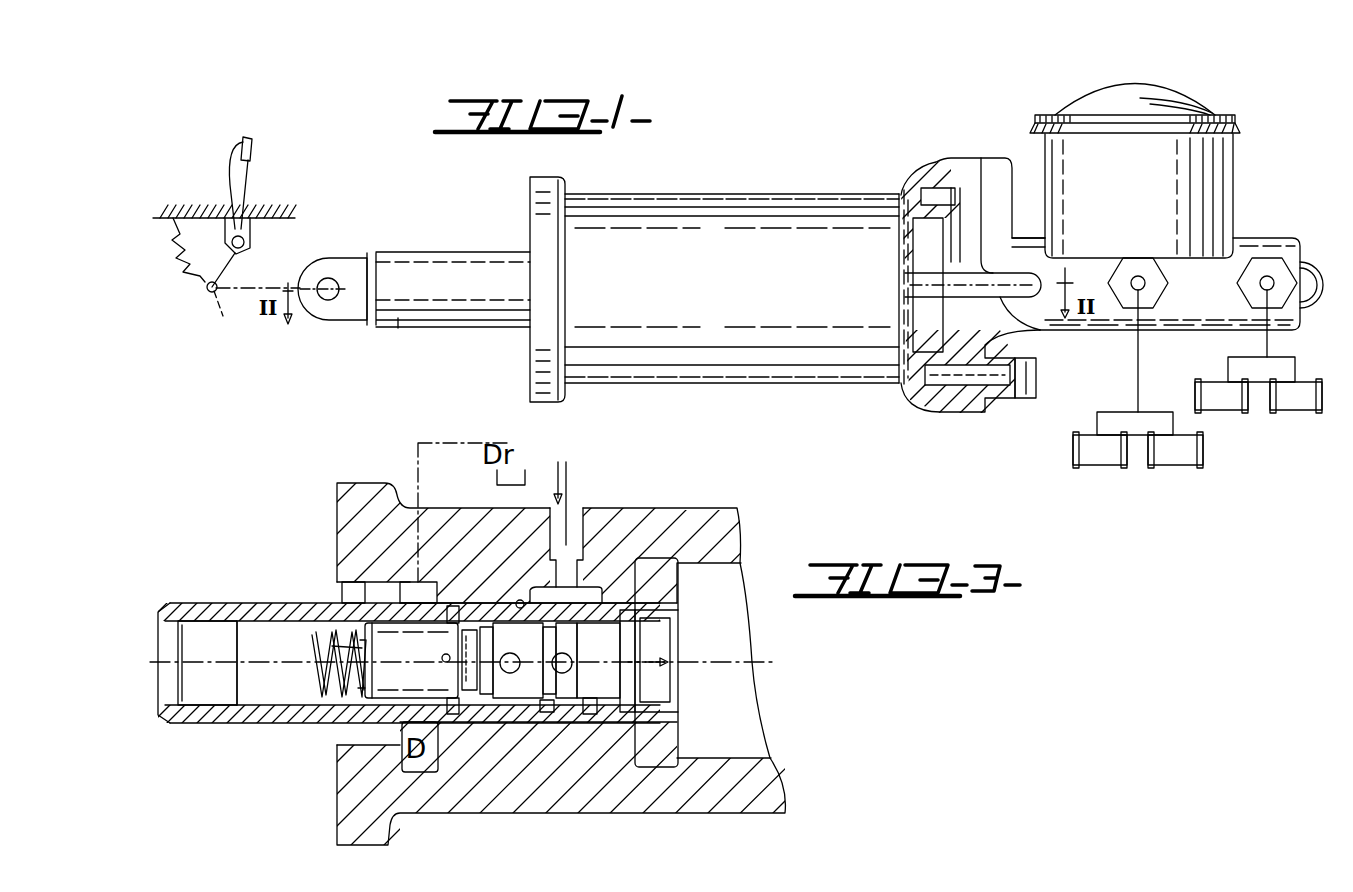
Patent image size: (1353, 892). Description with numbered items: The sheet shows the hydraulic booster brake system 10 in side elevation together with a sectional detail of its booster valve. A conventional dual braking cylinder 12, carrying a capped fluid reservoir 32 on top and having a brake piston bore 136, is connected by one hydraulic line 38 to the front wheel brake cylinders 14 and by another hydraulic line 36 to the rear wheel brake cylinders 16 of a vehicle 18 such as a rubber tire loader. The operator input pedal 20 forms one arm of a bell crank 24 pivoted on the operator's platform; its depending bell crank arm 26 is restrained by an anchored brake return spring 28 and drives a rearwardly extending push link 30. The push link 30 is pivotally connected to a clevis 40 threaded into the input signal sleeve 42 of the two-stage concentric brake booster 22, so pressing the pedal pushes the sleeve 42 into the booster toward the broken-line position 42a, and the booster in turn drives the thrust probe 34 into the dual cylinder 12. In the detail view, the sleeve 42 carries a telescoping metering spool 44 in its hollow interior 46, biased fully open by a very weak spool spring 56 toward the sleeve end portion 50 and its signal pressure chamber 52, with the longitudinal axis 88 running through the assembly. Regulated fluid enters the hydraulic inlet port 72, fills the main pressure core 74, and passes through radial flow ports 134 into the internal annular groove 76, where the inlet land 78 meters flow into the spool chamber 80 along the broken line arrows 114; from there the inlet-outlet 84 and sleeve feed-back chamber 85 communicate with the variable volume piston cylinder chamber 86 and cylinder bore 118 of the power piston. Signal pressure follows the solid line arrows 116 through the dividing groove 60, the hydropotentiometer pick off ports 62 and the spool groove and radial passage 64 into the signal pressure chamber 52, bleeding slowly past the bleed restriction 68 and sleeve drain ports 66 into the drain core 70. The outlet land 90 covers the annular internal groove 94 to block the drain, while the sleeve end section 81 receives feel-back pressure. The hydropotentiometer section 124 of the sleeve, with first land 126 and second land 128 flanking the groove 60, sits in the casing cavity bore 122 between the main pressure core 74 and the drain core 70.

In FIG. 1, the hydraulic booster brake system 10 is at (861, 175).
In FIG. 1, the dual braking cylinder 12 is at (1169, 331).
In FIG. 1, the front wheel brake cylinders 14 is at (1165, 467).
In FIG. 1, the rear wheel brake cylinders 16 is at (1281, 413).
In FIG. 1, the vehicle 18 is at (297, 219).
In FIG. 1, the operator input pedal 20 is at (240, 177).
In FIG. 1, the two-stage concentric brake booster 22 is at (530, 205).
In FIG. 3, the two-stage concentric brake booster 22 is at (696, 508).
In FIG. 1, the bell crank 24 is at (252, 242).
In FIG. 1, the depending bell crank arm 26 is at (227, 270).
In FIG. 1, the brake return spring 28 is at (188, 272).
In FIG. 1, the push link 30 is at (225, 316).
In FIG. 1, the capped fluid reservoir 32 is at (1045, 150).
In FIG. 1, the thrust probe 34 is at (1023, 334).
In FIG. 1, the hydraulic line 36 is at (1262, 320).
In FIG. 1, the hydraulic brake line 38 is at (1138, 316).
In FIG. 1, the clevis 40 is at (345, 262).
In FIG. 1, the input signal sleeve 42 is at (391, 252).
In FIG. 3, the input signal sleeve 42 is at (179, 603).
In FIG. 1, the rearwardly depressed position of sleeve 42a is at (400, 330).
In FIG. 1, the brake piston bore 136 is at (1030, 320).
In FIG. 3, the metering spool 44 is at (331, 681).
In FIG. 3, the hollow interior of sleeve 46 is at (546, 723).
In FIG. 3, the end portion of sleeve 50 is at (338, 606).
In FIG. 3, the signal pressure chamber 52 is at (319, 616).
In FIG. 3, the spool spring 56 is at (321, 665).
In FIG. 3, the dividing groove 60 is at (483, 591).
In FIG. 3, the hydropotentiometer pick off ports 62 is at (509, 723).
In FIG. 3, the spool groove and radial passage 64 is at (511, 660).
In FIG. 3, the sleeve drain ports 66 is at (451, 723).
In FIG. 3, the bleed restriction 68 is at (441, 659).
In FIG. 3, the drain core 70 is at (431, 776).
In FIG. 3, the hydraulic inlet port 72 is at (576, 508).
In FIG. 3, the main pressure core 74 is at (591, 726).
In FIG. 3, the internal annular groove 76 is at (600, 659).
In FIG. 3, the inlet land 78 is at (600, 659).
In FIG. 3, the spool chamber 80 is at (604, 680).
In FIG. 3, the end section of sleeve 81 is at (649, 721).
In FIG. 3, the inlet-outlet 84 is at (663, 651).
In FIG. 3, the sleeve feed-back chamber 85 is at (656, 661).
In FIG. 3, the variable volume piston cylinder chamber 86 is at (667, 790).
In FIG. 3, the longitudinal axis 88 is at (226, 659).
In FIG. 3, the outlet land 90 is at (413, 688).
In FIG. 3, the annular internal groove 94 is at (443, 632).
In FIG. 3, the broken line arrows 114 is at (649, 660).
In FIG. 3, the solid line arrows 116 is at (331, 647).
In FIG. 3, the cylinder bore 118 is at (706, 758).
In FIG. 3, the cavity bore 122 is at (487, 601).
In FIG. 3, the hydropotentiometer section 124 is at (582, 601).
In FIG. 3, the first land 126 is at (456, 603).
In FIG. 3, the second land 128 is at (520, 600).
In FIG. 3, the radial flow ports 134 is at (576, 731).